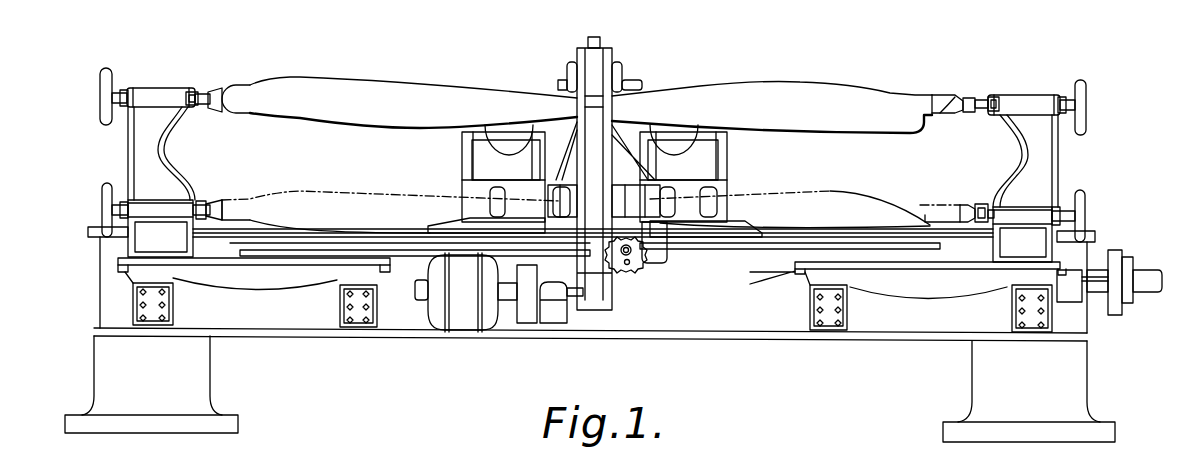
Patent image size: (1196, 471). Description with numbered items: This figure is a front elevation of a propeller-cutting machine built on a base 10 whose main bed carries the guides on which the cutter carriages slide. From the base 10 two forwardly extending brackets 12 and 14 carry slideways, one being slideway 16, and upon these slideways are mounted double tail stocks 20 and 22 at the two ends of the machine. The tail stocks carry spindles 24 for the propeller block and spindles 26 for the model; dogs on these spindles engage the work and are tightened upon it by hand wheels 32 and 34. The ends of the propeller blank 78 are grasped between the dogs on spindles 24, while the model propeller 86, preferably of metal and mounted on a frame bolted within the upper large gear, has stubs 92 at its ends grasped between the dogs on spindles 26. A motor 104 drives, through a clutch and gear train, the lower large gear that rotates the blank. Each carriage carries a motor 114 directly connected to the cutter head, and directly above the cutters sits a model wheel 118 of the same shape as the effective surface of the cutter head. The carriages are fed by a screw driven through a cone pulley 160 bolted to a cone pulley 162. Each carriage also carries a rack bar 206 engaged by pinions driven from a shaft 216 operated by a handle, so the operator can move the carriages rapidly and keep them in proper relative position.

The base 10 is at (590, 334).
The forwardly extending bracket 12 is at (908, 278).
The forwardly extending bracket 14 is at (255, 280).
The slideway 16 is at (888, 269).
The double tail stock 20 is at (1024, 178).
The double tail stock 22 is at (161, 172).
The spindle 24 is at (203, 208).
The spindle 26 is at (204, 101).
The hand wheel 32 is at (102, 197).
The hand wheel 34 is at (105, 88).
The propeller blank 78 is at (773, 200).
The model propeller 86 is at (788, 103).
The stub 92 is at (934, 99).
The motor 104 is at (468, 314).
The motor 114 is at (512, 193).
The model wheel 118 is at (218, 263).
The cone pulley 160 is at (1114, 253).
The cone pulley 162 is at (1117, 290).
The rack bar 206 is at (328, 252).
The shaft 216 is at (629, 264).